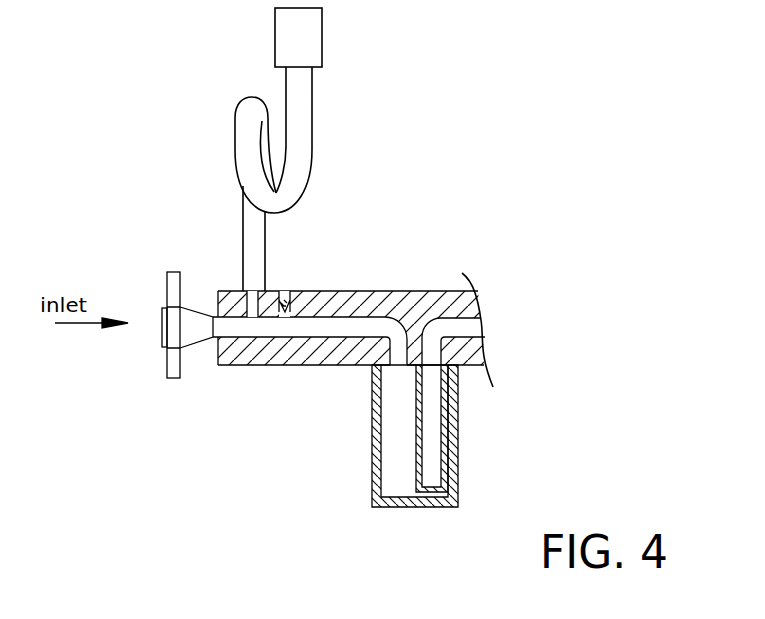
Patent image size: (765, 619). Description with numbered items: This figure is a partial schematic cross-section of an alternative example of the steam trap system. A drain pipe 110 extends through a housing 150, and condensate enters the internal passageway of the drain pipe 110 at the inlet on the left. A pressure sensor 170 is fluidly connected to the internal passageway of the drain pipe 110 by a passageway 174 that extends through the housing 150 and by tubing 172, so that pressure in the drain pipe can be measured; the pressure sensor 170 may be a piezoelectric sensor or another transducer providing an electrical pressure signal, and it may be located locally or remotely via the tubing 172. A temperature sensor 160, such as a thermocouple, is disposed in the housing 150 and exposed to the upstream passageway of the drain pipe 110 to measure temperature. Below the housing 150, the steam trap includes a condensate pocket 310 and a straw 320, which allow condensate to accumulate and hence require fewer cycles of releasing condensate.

The drain pipe 110 is at (333, 330).
The housing 150 is at (245, 362).
The temperature sensor 160 is at (312, 291).
The pressure sensor 170 is at (283, 40).
The tubing 172 is at (298, 100).
The passageway 174 is at (231, 291).
The condensate pocket 310 is at (373, 478).
The straw 320 is at (452, 455).